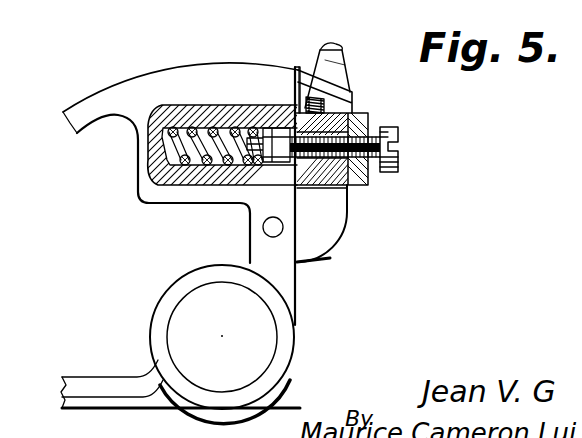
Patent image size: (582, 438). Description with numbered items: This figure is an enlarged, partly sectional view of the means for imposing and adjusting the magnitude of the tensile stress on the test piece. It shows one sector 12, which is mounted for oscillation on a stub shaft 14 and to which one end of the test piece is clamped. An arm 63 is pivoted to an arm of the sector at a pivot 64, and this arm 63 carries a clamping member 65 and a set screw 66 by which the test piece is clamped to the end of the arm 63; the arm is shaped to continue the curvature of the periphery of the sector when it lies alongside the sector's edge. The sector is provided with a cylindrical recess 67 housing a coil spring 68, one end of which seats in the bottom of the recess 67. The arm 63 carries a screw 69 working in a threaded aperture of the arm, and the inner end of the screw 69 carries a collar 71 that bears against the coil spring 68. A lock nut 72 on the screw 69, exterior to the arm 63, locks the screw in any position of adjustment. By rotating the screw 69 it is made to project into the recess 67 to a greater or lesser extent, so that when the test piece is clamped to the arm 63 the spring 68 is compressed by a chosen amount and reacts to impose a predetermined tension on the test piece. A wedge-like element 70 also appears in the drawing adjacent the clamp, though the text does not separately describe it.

The sector 12 is at (153, 80).
The stub shaft 14 is at (260, 330).
The arm 63 is at (328, 208).
The pivot 64 is at (277, 229).
The clamping member 65 is at (344, 58).
The set screw 66 is at (333, 43).
The cylindrical recess 67 is at (243, 107).
The coil spring 68 is at (208, 125).
The screw 69 is at (368, 117).
The strap 70 is at (352, 95).
The collar 71 is at (294, 65).
The lock nut 72 is at (370, 179).